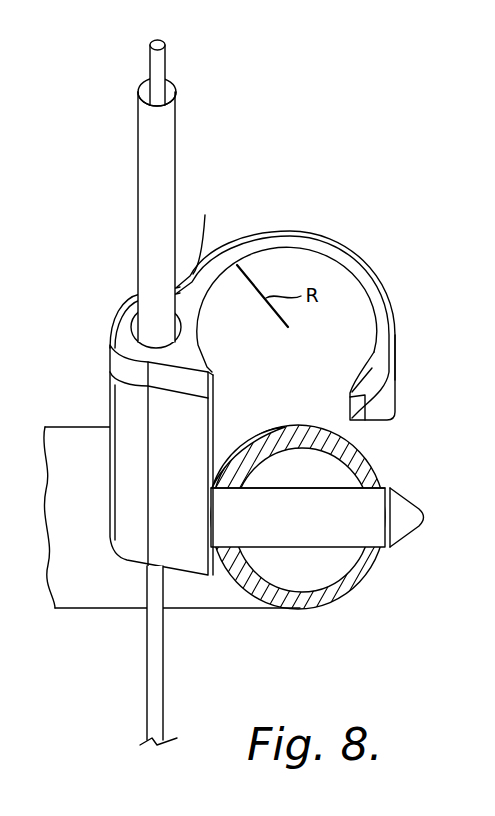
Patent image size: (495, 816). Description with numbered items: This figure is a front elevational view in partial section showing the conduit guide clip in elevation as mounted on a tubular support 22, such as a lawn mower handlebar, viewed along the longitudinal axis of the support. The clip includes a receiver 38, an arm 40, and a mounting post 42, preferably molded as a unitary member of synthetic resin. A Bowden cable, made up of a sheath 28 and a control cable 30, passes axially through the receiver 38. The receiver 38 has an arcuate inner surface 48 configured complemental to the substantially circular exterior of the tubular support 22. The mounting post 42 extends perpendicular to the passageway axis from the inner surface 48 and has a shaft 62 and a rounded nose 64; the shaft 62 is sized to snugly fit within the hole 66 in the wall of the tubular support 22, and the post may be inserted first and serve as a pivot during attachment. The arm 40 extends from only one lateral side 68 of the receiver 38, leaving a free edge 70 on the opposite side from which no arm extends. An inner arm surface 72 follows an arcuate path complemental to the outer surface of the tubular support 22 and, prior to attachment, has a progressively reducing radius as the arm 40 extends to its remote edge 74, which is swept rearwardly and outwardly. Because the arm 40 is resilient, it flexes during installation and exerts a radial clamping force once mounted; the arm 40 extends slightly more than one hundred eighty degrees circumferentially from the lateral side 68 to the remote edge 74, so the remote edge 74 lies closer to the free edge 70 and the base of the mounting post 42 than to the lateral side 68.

The tubular support 22 is at (352, 585).
The sheath 28 is at (172, 131).
The control cable 30 is at (160, 67).
The receiver 38 is at (122, 399).
The arm 40 is at (337, 238).
The mounting post 42 is at (371, 536).
The inner surface 48 is at (203, 352).
The shaft 62 is at (268, 538).
The rounded nose 64 is at (405, 510).
The hole 66 is at (377, 487).
The lateral side 68 is at (205, 215).
The free edge 70 is at (207, 390).
The inner arm surface 72 is at (357, 302).
The remote edge 74 is at (362, 418).